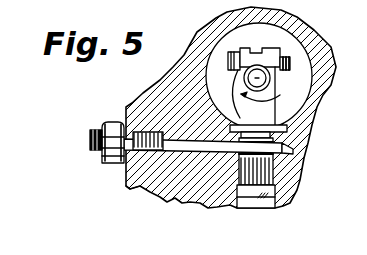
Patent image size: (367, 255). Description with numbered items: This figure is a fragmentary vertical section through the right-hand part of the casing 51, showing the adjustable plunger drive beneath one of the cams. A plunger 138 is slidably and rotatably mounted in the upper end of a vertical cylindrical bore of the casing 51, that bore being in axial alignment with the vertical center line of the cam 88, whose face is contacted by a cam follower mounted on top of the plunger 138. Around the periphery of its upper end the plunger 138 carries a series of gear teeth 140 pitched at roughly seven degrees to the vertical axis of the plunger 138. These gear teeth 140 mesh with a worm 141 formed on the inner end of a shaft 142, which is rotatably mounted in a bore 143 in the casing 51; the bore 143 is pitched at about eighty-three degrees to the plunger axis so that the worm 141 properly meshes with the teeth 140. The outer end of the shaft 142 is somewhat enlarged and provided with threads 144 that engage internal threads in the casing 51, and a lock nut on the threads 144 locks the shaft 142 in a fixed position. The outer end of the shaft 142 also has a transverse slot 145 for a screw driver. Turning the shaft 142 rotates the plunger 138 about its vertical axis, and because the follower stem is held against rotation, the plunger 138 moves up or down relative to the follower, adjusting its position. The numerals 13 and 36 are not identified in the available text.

The housing 13 is at (314, 103).
The shaft 36 is at (244, 79).
The casing 51 is at (312, 112).
The cam 88 is at (272, 95).
The plunger 138 is at (255, 198).
The gear teeth 140 is at (277, 175).
The worm 141 is at (285, 146).
The shaft 142 is at (195, 158).
The bore 143 is at (127, 188).
The threads 144 is at (118, 121).
The transverse slot 145 is at (90, 142).